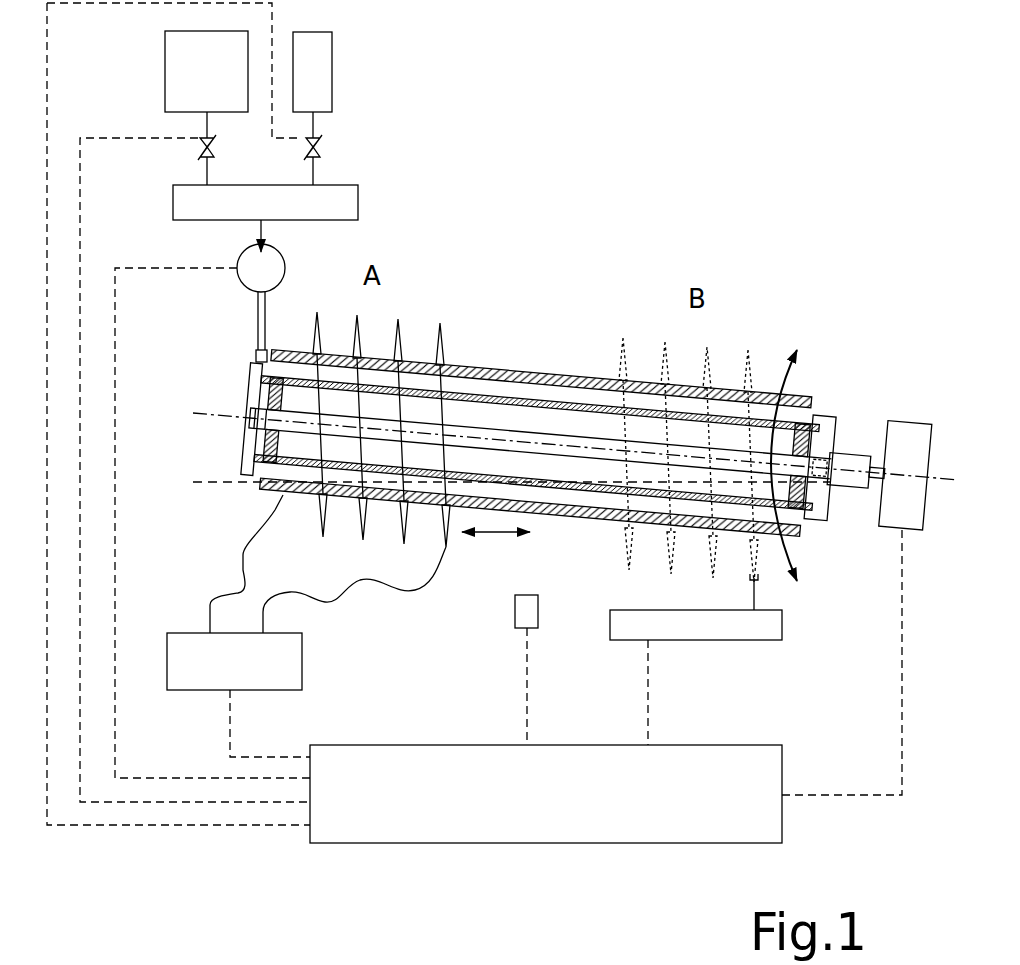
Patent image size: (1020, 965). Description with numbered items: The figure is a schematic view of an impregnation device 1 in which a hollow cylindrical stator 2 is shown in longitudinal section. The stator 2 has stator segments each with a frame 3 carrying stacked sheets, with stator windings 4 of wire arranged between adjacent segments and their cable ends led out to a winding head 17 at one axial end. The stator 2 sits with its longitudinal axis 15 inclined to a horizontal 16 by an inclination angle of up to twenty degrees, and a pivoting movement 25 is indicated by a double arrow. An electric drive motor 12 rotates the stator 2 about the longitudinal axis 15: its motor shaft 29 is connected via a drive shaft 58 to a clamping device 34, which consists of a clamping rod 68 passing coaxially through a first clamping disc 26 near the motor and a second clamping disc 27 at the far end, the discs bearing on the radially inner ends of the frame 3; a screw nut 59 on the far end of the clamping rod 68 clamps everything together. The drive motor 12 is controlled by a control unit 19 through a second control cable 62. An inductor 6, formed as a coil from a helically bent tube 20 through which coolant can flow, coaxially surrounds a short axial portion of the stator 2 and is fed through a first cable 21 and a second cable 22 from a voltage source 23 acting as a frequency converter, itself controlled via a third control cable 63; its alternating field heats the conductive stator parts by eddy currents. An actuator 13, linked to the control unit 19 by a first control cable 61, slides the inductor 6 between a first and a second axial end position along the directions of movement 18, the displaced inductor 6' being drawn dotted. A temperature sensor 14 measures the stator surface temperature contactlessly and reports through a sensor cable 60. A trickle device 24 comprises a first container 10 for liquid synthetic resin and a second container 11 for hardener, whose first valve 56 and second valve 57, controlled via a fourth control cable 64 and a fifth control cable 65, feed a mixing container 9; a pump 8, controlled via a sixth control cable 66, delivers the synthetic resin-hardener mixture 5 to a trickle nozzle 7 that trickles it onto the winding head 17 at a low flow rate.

The impregnation device 1 is at (728, 188).
The stator 2 is at (539, 412).
The frame 3 is at (604, 356).
The stator windings 4 is at (540, 397).
The synthetic resin-hardener mixture 5 is at (260, 358).
The inductor 6 is at (386, 405).
The helically bent tube 20 is at (400, 345).
The inductor in second end position 6' is at (706, 440).
The trickle nozzle 7 is at (257, 313).
The pump 8 is at (285, 268).
The mixing container 9 is at (255, 215).
The first container 10 is at (193, 82).
The second container 11 is at (299, 82).
The drive motor 12 is at (907, 456).
The actuator 13 is at (743, 640).
The temperature sensor 14 is at (515, 610).
The longitudinal axis 15 is at (556, 424).
The horizontal 16 is at (193, 482).
The winding head 17 is at (212, 518).
The directions of movement 18 is at (495, 537).
The control unit 19 is at (531, 805).
The first cable 21 is at (210, 602).
The second cable 22 is at (330, 601).
The voltage source 23 is at (218, 675).
The trickle device 24 is at (393, 105).
The pivoting movement 25 is at (788, 380).
The first clamping disc 26 is at (825, 444).
The second clamping disc 27 is at (212, 424).
The motor shaft 29 is at (876, 441).
The clamping device 34 is at (196, 434).
The first valve 56 is at (200, 152).
The second valve 57 is at (323, 150).
The drive shaft 58 is at (835, 557).
The screw nut 59 is at (210, 384).
The sensor cable 60 is at (527, 702).
The first control cable 61 is at (648, 702).
The second control cable 62 is at (902, 703).
The third control cable 63 is at (230, 720).
The fourth control cable 64 is at (138, 4).
The fifth control cable 65 is at (127, 138).
The sixth control cable 66 is at (145, 267).
The clamping rod 68 is at (542, 524).